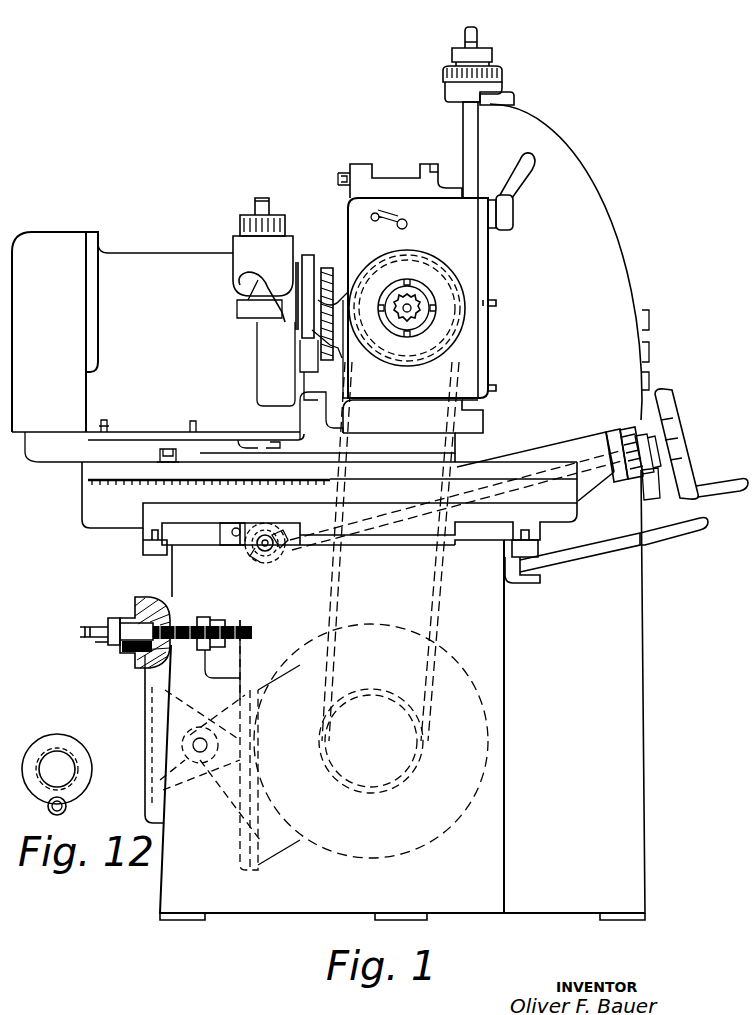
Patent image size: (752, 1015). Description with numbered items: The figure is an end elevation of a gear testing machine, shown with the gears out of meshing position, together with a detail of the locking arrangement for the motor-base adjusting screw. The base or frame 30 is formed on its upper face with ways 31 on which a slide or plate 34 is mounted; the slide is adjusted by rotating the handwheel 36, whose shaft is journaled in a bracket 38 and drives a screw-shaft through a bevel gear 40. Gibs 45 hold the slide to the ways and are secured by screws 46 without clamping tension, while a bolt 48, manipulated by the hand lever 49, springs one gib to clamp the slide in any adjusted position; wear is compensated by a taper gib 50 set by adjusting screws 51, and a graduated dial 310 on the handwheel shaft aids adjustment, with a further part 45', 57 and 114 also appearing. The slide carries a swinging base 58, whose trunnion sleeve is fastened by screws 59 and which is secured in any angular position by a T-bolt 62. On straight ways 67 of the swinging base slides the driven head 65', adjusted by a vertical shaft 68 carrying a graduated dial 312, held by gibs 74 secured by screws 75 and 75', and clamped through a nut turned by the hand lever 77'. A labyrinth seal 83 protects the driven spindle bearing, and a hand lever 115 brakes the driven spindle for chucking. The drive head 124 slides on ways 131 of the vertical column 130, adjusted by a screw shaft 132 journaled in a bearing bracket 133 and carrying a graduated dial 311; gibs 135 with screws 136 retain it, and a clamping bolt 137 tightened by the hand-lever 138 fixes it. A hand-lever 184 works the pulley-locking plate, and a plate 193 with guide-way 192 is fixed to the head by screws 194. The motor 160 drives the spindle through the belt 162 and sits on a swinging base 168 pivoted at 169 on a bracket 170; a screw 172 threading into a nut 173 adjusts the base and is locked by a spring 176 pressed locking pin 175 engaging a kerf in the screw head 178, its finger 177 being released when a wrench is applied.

In FIG. 1, the base or frame 30 is at (648, 804).
In FIG. 1, the ways 31 is at (203, 546).
In FIG. 1, the slide or plate 34 is at (108, 520).
In FIG. 1, the handwheel 36 is at (692, 468).
In FIG. 1, the bracket 38 is at (573, 438).
In FIG. 1, the bevel gear 40 is at (262, 562).
In FIG. 1, the gibs 45 is at (347, 542).
In FIG. 1, the clamp bolt 45' is at (534, 518).
In FIG. 1, the screws 46 is at (170, 564).
In FIG. 1, the bolt 48 is at (525, 583).
In FIG. 1, the hand lever 49 is at (588, 554).
In FIG. 1, the taper gib 50 is at (234, 524).
In FIG. 1, the adjusting screws 51 is at (268, 530).
In FIG. 1, the feed screw nut 57 is at (588, 468).
In FIG. 1, the swinging base 58 is at (68, 466).
In FIG. 1, the screws 59 is at (285, 550).
In FIG. 1, the T-bolt 62 is at (178, 452).
In FIG. 1, the motor 65' is at (122, 326).
In FIG. 1, the straight ways 67 is at (402, 430).
In FIG. 1, the vertical shaft 68 is at (262, 199).
In FIG. 1, the gibs 74 is at (327, 444).
In FIG. 1, the screws 75 is at (293, 441).
In FIG. 1, the clamp screw 75' is at (164, 418).
In FIG. 1, the hand lever 77' is at (254, 297).
In FIG. 1, the labyrinth seal 83 is at (309, 255).
In FIG. 1, the handle 114 is at (722, 496).
In FIG. 1, the hand lever 115 is at (324, 334).
In FIG. 1, the drive head 124 is at (352, 214).
In FIG. 1, the vertical column or upright 130 is at (614, 250).
In FIG. 1, the ways 131 is at (468, 116).
In FIG. 1, the screw shaft 132 is at (478, 34).
In FIG. 1, the bearing bracket 133 is at (514, 99).
In FIG. 1, the gibs 135 is at (490, 348).
In FIG. 1, the screws 136 is at (490, 298).
In FIG. 1, the clamping bolt 137 is at (514, 210).
In FIG. 1, the hand-lever 138 is at (532, 168).
In FIG. 1, the motor 160 is at (418, 854).
In FIG. 1, the belt 162 is at (437, 600).
In FIG. 1, the swinging base 168 is at (233, 840).
In FIG. 1, the pivot 169 is at (205, 738).
In FIG. 1, the bracket 170 is at (183, 776).
In FIG. 1, the screw 172 is at (181, 616).
In FIG. 12, the screw 172 is at (65, 769).
In FIG. 1, the nut 173 is at (218, 612).
In FIG. 1, the locking pin 175 is at (118, 653).
In FIG. 12, the locking pin 175 is at (67, 807).
In FIG. 1, the spring 176 is at (138, 668).
In FIG. 1, the finger 177 is at (98, 644).
In FIG. 1, the head of the screw 178 is at (112, 618).
In FIG. 1, the hand-lever 184 is at (389, 222).
In FIG. 1, the guide-way 192 is at (390, 166).
In FIG. 1, the plate 193 is at (358, 164).
In FIG. 1, the screws 194 is at (438, 182).
In FIG. 1, the graduated dial 310 is at (626, 428).
In FIG. 1, the graduated dial 311 is at (500, 68).
In FIG. 1, the graduated dial 312 is at (238, 232).